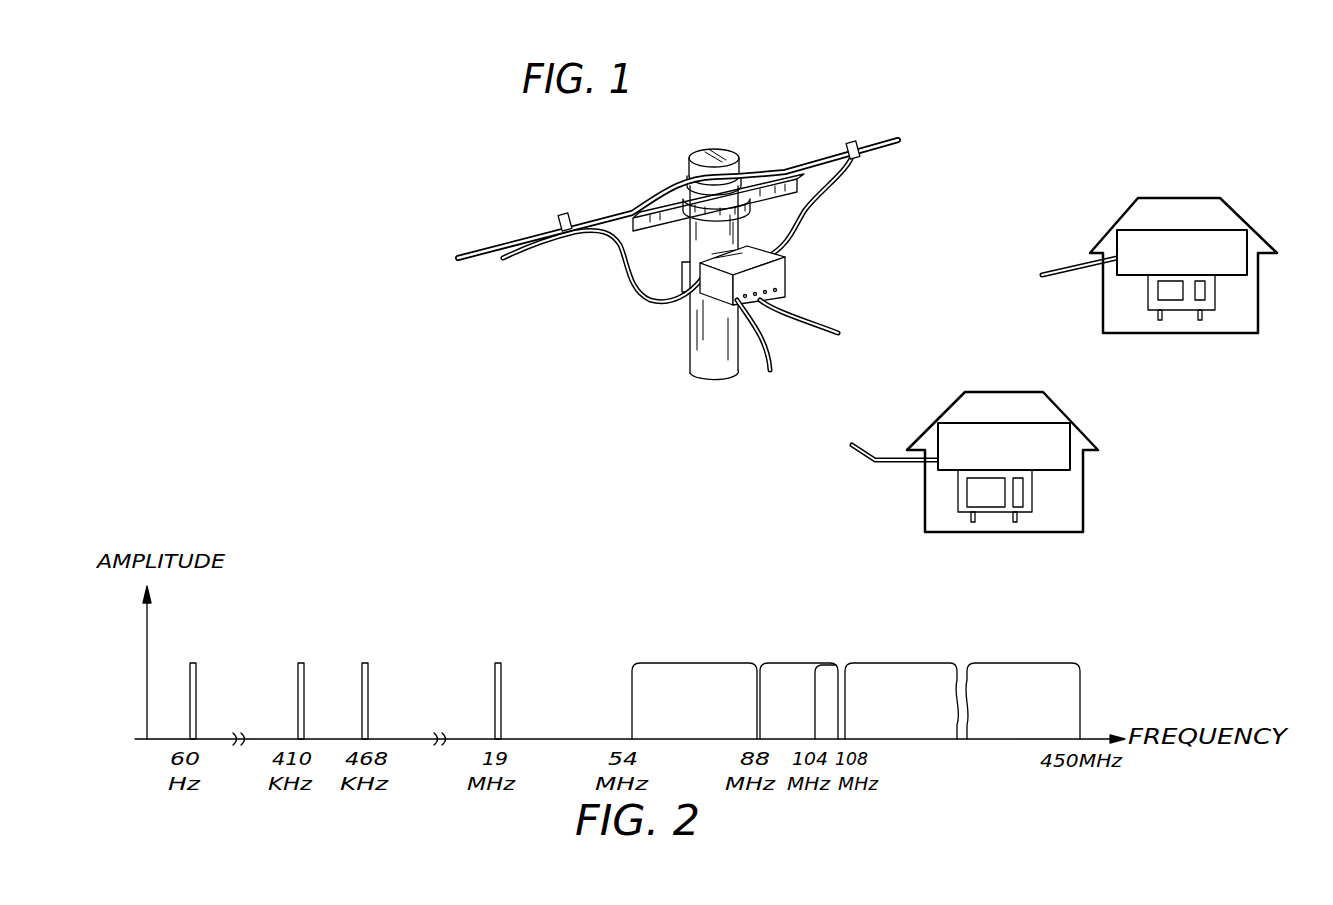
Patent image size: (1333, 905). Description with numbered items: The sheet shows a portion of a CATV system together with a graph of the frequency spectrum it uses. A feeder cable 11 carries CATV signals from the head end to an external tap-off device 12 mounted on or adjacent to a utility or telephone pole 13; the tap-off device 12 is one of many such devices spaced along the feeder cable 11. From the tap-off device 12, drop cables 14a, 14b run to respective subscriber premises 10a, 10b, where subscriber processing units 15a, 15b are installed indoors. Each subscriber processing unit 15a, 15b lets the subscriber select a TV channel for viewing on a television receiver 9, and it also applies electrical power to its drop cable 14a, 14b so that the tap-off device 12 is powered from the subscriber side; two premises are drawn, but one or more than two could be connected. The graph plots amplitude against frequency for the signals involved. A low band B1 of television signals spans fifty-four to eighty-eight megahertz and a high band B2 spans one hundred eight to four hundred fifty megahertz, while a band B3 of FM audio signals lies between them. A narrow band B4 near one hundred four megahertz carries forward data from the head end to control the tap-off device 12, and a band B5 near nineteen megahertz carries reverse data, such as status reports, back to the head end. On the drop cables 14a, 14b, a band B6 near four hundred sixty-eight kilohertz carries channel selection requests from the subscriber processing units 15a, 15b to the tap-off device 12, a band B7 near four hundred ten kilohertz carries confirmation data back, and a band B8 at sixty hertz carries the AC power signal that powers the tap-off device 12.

In FIG. 1, the television receiver 9 is at (1148, 305).
In FIG. 1, the subscriber premises 10a is at (1083, 497).
In FIG. 1, the subscriber premises 10b is at (1258, 312).
In FIG. 1, the feeder cable 11 is at (540, 247).
In FIG. 1, the tap-off device 12 is at (785, 277).
In FIG. 1, the utility or telephone pole 13 is at (733, 127).
In FIG. 1, the drop cable 14a is at (777, 350).
In FIG. 1, the drop cable 14b is at (823, 323).
In FIG. 1, the subscriber processing unit 15a is at (1027, 421).
In FIG. 1, the subscriber processing unit 15b is at (1205, 232).
In FIG. 2, the low band B1 is at (702, 662).
In FIG. 2, the high band B2 is at (918, 662).
In FIG. 2, the band of FM audio signals B3 is at (790, 662).
In FIG. 2, the forward data band B4 is at (826, 662).
In FIG. 2, the reverse data band B5 is at (498, 660).
In FIG. 2, the subscriber-to-tap data band B6 is at (365, 660).
In FIG. 2, the tap-to-subscriber data band B7 is at (301, 660).
In FIG. 2, the AC power band B8 is at (194, 660).